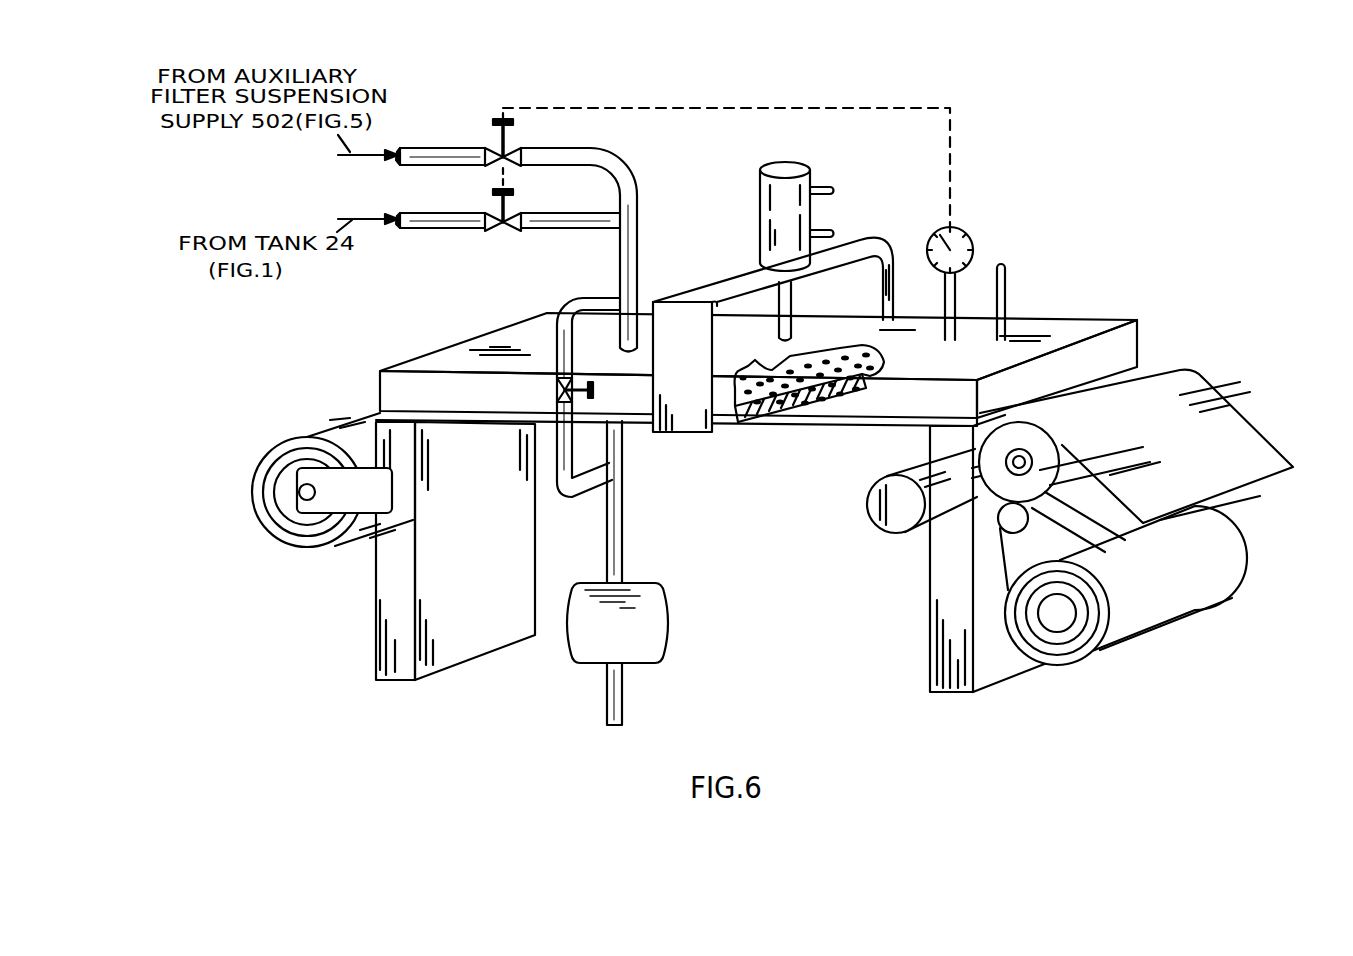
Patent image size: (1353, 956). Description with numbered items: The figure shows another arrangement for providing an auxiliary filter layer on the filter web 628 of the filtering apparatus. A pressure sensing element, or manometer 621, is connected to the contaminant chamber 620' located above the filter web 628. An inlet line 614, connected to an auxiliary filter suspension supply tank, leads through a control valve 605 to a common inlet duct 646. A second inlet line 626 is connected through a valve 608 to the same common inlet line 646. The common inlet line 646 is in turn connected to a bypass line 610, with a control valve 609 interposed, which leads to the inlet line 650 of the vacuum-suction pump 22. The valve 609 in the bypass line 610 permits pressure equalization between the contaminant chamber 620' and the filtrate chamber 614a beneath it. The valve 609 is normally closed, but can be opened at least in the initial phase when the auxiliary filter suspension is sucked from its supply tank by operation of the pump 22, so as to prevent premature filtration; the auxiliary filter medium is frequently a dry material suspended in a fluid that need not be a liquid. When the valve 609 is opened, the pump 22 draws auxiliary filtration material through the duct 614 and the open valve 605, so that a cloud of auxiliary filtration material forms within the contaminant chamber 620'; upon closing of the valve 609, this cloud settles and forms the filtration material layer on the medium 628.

The inlet line 614 is at (479, 151).
The control valve 605 is at (523, 150).
The inlet line 626 is at (428, 232).
The valve 608 is at (481, 213).
The common inlet duct 646 is at (639, 253).
The manometer 621 is at (953, 228).
The bypass line 610 is at (560, 500).
The control valve 609 is at (553, 390).
The inlet line 650 is at (624, 481).
The vacuum-suction pump 22 is at (593, 640).
The filtrate chamber 614a is at (796, 402).
The contaminant chamber 620' is at (831, 367).
The filter web 628 is at (1062, 542).